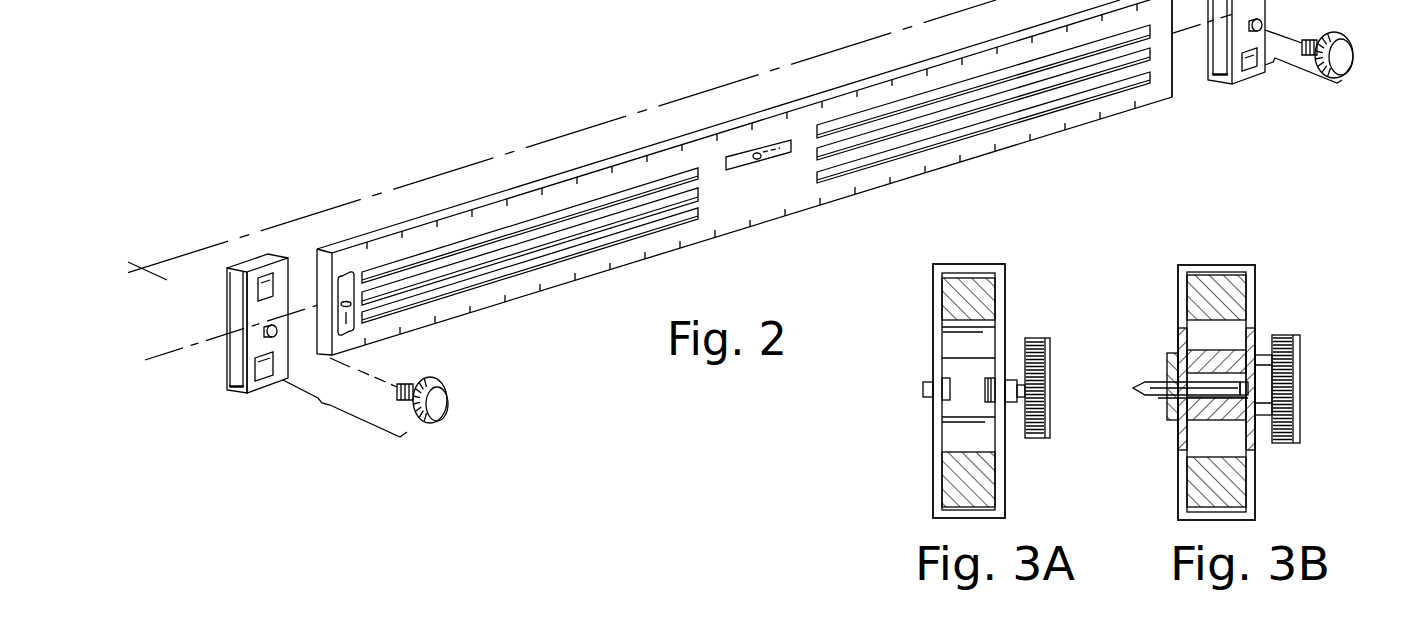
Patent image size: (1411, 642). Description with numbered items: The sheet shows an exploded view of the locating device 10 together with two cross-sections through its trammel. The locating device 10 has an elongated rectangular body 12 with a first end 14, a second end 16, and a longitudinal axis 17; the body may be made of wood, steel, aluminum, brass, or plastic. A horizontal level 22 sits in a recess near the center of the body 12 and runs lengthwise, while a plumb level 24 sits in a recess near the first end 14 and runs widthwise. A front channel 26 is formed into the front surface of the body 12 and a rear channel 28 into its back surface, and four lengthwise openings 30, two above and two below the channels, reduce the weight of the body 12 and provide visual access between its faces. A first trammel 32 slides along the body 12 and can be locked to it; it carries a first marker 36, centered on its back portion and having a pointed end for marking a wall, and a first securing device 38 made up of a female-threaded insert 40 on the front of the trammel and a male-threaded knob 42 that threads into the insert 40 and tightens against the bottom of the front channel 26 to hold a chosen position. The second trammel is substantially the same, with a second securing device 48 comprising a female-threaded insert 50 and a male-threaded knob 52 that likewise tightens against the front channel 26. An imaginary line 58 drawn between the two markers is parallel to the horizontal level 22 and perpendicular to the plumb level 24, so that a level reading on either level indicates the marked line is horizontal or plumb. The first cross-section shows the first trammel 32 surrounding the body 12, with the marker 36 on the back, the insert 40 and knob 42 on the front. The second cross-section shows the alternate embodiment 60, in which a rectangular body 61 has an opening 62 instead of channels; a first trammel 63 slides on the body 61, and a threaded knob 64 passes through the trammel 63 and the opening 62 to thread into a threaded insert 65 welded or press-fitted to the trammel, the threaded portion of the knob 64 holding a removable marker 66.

In FIG. 2, the locating device 10 is at (568, 400).
In FIG. 2, the rectangular body 12 is at (736, 221).
In FIG. 3A, the rectangular body 12 is at (948, 302).
In FIG. 2, the first end 14 is at (320, 267).
In FIG. 2, the second end 16 is at (1173, 80).
In FIG. 2, the longitudinal axis 17 is at (152, 366).
In FIG. 2, the horizontal level 22 is at (780, 140).
In FIG. 2, the plumb level 24 is at (350, 276).
In FIG. 2, the front channel 26 is at (768, 171).
In FIG. 3A, the rear channel 28 is at (945, 401).
In FIG. 2, the openings 30 is at (480, 236).
In FIG. 2, the first trammel 32 is at (232, 392).
In FIG. 3A, the first trammel 32 is at (937, 490).
In FIG. 2, the first marker 36 is at (232, 306).
In FIG. 3A, the first marker 36 is at (926, 388).
In FIG. 2, the first securing device 38 is at (311, 412).
In FIG. 2, the female-threaded insert 40 is at (279, 342).
In FIG. 3A, the female-threaded insert 40 is at (1010, 401).
In FIG. 2, the male-threaded knob 42 is at (445, 399).
In FIG. 3A, the male-threaded knob 42 is at (1044, 340).
In FIG. 2, the second securing device 48 is at (1273, 80).
In FIG. 2, the female-threaded insert 50 is at (1263, 24).
In FIG. 2, the male-threaded knob 52 is at (1346, 60).
In FIG. 2, the imaginary line 58 is at (590, 126).
In FIG. 3B, the alternate embodiment 60 is at (1280, 252).
In FIG. 3B, the rectangular body 61 is at (1223, 290).
In FIG. 3B, the opening 62 is at (1220, 367).
In FIG. 3B, the first trammel 63 is at (1178, 292).
In FIG. 3B, the threaded knob 64 is at (1298, 363).
In FIG. 3B, the threaded insert 65 is at (1173, 353).
In FIG. 3B, the marker 66 is at (1138, 386).